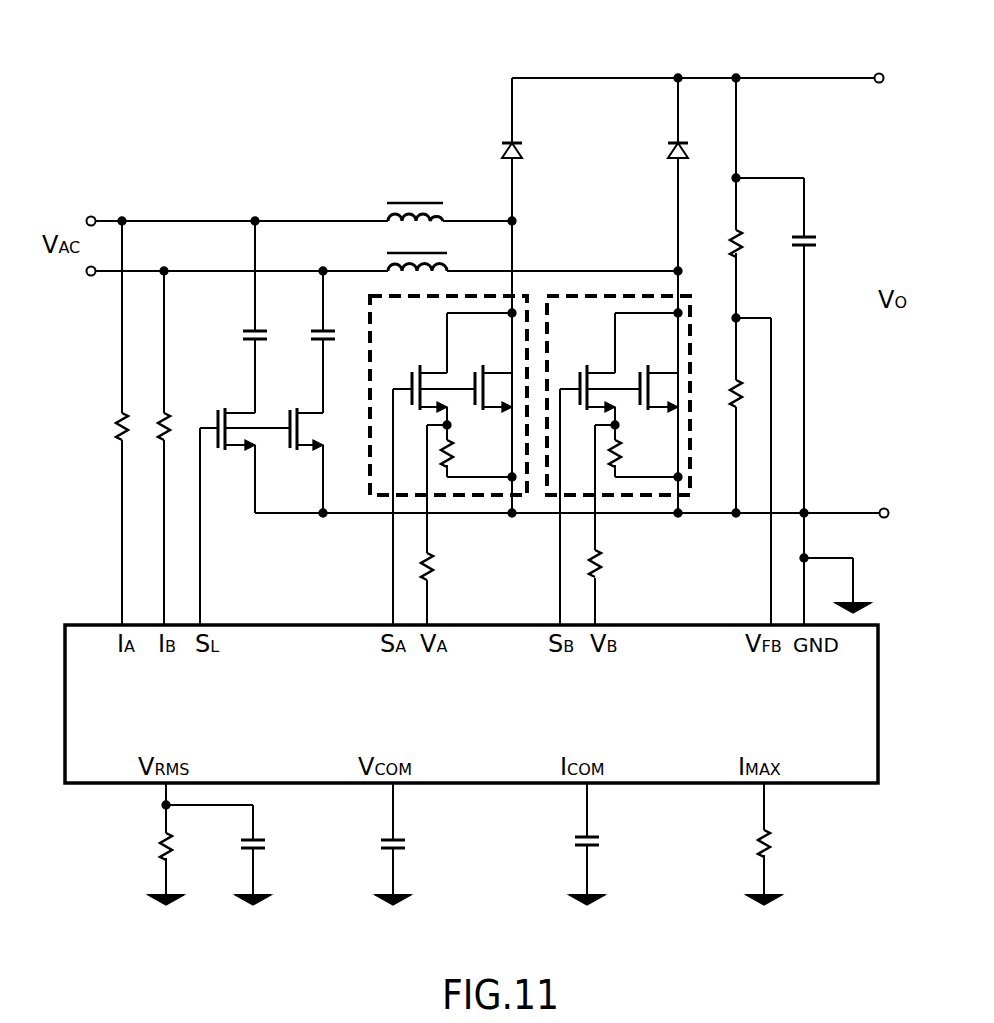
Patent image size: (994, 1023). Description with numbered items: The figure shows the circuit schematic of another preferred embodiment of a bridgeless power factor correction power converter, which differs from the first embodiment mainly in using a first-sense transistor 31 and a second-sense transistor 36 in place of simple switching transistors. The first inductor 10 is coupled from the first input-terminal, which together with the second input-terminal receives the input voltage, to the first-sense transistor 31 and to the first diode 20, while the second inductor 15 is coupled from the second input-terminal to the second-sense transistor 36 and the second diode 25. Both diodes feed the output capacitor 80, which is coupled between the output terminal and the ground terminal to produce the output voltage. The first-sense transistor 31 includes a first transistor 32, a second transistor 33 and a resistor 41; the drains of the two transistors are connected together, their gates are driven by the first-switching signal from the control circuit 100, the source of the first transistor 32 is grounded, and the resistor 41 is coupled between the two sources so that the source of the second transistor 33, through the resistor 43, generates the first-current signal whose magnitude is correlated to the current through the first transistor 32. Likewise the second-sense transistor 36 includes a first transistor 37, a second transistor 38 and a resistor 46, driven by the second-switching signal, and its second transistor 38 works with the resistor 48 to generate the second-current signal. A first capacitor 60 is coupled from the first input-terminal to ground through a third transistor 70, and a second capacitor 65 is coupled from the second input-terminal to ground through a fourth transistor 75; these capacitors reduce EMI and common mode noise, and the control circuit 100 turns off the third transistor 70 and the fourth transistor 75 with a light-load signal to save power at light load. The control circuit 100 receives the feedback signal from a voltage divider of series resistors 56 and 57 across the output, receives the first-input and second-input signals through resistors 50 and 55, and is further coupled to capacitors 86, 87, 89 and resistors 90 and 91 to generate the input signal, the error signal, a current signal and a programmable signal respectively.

The first inductor 10 is at (386, 218).
The second inductor 15 is at (386, 268).
The first diode 20 is at (500, 150).
The second diode 25 is at (665, 150).
The first-sense transistor 31 is at (372, 312).
The first transistor 32 is at (496, 368).
The second transistor 33 is at (432, 368).
The second-sense transistor 36 is at (690, 318).
The first transistor 37 is at (662, 368).
The second transistor 38 is at (600, 368).
The resistor 41 is at (458, 453).
The resistor 43 is at (440, 570).
The resistor 46 is at (625, 453).
The resistor 48 is at (604, 563).
The resistor 50 is at (118, 427).
The resistor 55 is at (160, 440).
The resistor 56 is at (733, 232).
The resistor 57 is at (731, 410).
The first capacitor 60 is at (245, 336).
The second capacitor 65 is at (313, 336).
The third transistor 70 is at (260, 432).
The fourth transistor 75 is at (316, 440).
The output capacitor 80 is at (808, 238).
The capacitor 86 is at (267, 845).
The capacitor 87 is at (407, 845).
The capacitor 89 is at (601, 842).
The resistor 90 is at (172, 848).
The resistor 91 is at (776, 848).
The control circuit 100 is at (78, 624).